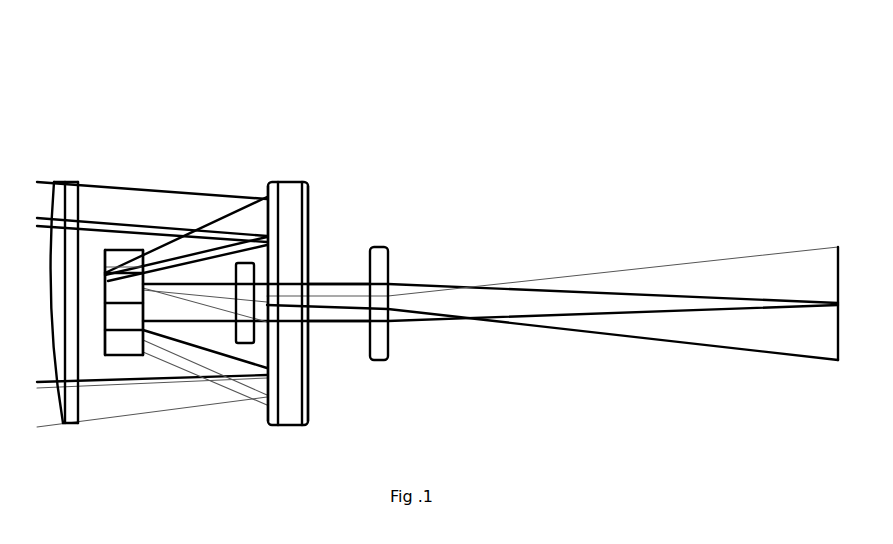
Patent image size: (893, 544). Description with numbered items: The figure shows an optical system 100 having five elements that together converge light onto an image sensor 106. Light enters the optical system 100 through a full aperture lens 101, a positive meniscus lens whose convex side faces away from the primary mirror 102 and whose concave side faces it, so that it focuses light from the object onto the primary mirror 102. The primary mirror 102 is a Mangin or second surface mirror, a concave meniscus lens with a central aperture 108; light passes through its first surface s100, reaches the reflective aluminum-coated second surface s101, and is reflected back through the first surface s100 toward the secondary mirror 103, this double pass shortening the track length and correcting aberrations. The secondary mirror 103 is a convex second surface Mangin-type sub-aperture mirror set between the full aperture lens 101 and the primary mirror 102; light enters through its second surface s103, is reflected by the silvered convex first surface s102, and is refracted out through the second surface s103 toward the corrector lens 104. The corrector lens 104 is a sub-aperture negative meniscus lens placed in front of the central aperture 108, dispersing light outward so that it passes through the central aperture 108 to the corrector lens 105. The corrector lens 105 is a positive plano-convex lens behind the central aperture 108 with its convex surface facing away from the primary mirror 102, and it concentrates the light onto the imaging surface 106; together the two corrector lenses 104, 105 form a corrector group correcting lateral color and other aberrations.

The optical system 100 is at (97, 69).
The full aperture lens 101 is at (98, 183).
The primary mirror 102 is at (305, 187).
The secondary mirror 103 is at (132, 357).
The corrector lens 104 is at (240, 353).
The corrector lens 105 is at (388, 252).
The image sensor 106 is at (838, 247).
The central aperture 108 is at (313, 327).
The first surface of primary mirror s100 is at (262, 183).
The second surface of primary mirror s101 is at (310, 225).
The first surface of second mirror s102 is at (100, 277).
The second surface of second mirror s103 is at (145, 295).